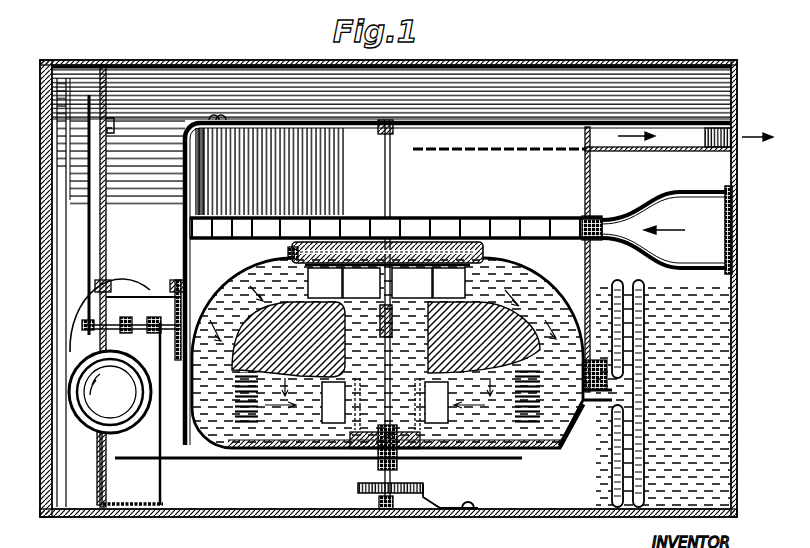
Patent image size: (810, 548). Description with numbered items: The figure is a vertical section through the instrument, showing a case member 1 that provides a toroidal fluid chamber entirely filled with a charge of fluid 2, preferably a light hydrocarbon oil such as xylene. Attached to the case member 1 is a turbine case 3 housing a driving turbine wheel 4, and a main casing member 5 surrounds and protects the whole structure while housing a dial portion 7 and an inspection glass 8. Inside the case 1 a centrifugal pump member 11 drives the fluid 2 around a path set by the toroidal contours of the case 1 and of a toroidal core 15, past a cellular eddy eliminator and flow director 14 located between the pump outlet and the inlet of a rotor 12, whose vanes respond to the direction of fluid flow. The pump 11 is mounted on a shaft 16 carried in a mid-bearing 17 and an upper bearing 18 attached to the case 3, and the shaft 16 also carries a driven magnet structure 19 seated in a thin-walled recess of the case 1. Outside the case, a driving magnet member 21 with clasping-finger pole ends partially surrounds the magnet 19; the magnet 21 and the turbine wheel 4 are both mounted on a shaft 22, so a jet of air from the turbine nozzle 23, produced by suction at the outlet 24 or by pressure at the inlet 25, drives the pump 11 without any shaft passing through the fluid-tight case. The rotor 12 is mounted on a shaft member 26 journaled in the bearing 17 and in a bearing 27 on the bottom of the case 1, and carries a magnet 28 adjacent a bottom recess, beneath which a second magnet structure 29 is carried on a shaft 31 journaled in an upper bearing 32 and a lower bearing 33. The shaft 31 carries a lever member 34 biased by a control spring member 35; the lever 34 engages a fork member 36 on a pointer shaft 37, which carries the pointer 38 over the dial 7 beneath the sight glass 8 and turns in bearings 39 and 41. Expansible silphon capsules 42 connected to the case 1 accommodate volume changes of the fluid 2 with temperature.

The case member 1 is at (590, 410).
The fluid 2 is at (537, 300).
The turbine case 3 is at (590, 298).
The driving turbine wheel 4 is at (486, 225).
The main casing member 5 is at (608, 63).
The dial portion 7 is at (117, 120).
The inspection glass 8 is at (40, 173).
The centrifugal pump member 11 is at (456, 283).
The rotor 12 is at (455, 385).
The eddy eliminator and flow director 14 is at (237, 449).
The toroidal core 15 is at (540, 345).
The shaft 16 is at (348, 243).
The mid-bearing 17 is at (393, 325).
The upper bearing 18 is at (380, 250).
The driven magnet structure 19 is at (406, 330).
The driving magnet member 21 is at (458, 243).
The shaft 22 is at (384, 147).
The turbine nozzle 23 is at (607, 220).
The outlet 24 is at (693, 119).
The inlet 25 is at (705, 262).
The shaft member 26 is at (392, 422).
The bearing 27 is at (367, 456).
The magnet 28 is at (421, 430).
The second magnet structure 29 is at (360, 450).
The shaft 31 is at (383, 498).
The upper bearing 32 is at (383, 465).
The lower bearing 33 is at (412, 500).
The lever member 34 is at (160, 460).
The control spring member 35 is at (370, 493).
The fork member 36 is at (163, 488).
The pointer shaft 37 is at (135, 296).
The pointer 38 is at (87, 212).
The bearing 39 is at (153, 317).
The bearing 41 is at (95, 338).
The silphon capsules 42 is at (645, 337).